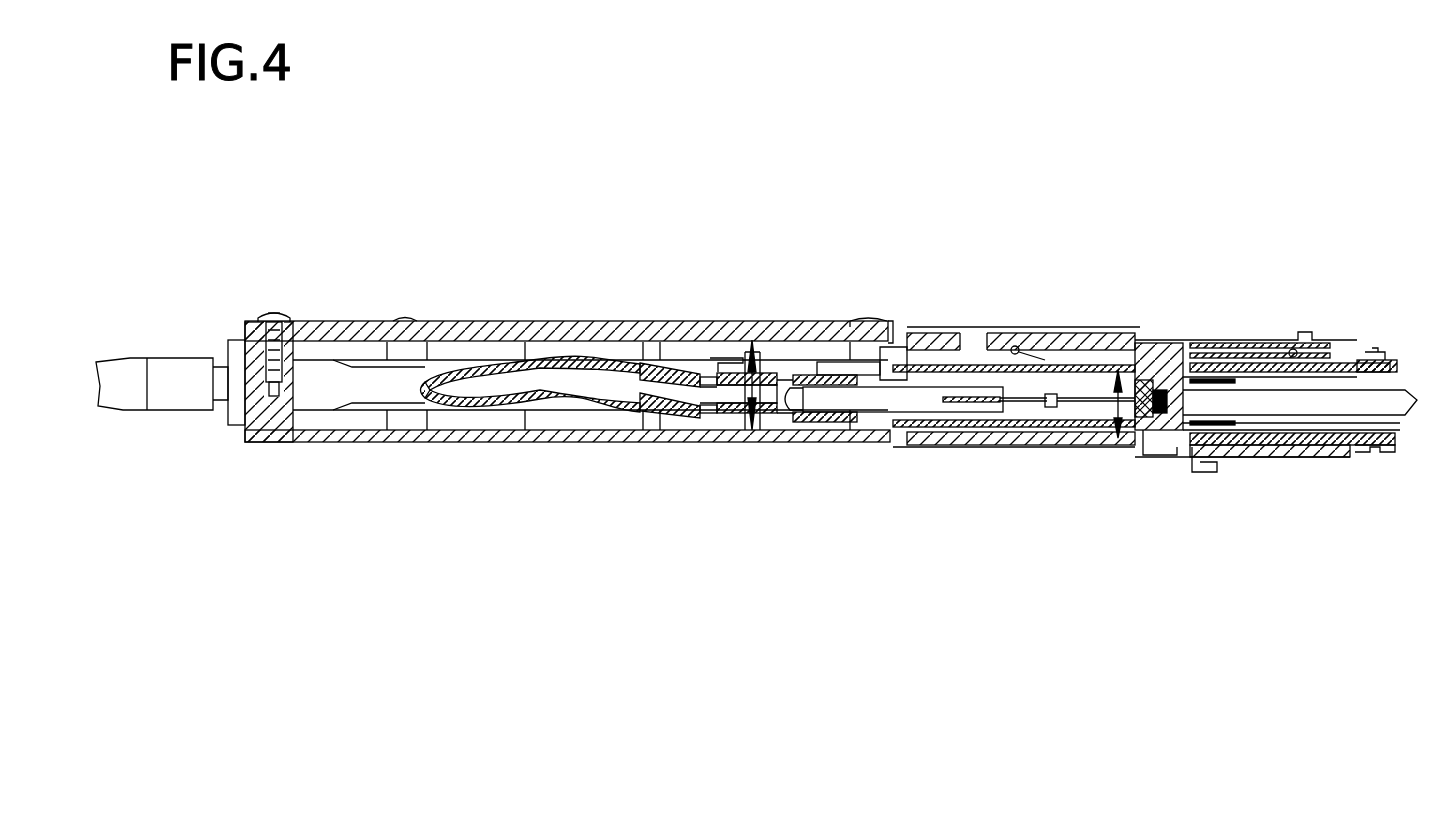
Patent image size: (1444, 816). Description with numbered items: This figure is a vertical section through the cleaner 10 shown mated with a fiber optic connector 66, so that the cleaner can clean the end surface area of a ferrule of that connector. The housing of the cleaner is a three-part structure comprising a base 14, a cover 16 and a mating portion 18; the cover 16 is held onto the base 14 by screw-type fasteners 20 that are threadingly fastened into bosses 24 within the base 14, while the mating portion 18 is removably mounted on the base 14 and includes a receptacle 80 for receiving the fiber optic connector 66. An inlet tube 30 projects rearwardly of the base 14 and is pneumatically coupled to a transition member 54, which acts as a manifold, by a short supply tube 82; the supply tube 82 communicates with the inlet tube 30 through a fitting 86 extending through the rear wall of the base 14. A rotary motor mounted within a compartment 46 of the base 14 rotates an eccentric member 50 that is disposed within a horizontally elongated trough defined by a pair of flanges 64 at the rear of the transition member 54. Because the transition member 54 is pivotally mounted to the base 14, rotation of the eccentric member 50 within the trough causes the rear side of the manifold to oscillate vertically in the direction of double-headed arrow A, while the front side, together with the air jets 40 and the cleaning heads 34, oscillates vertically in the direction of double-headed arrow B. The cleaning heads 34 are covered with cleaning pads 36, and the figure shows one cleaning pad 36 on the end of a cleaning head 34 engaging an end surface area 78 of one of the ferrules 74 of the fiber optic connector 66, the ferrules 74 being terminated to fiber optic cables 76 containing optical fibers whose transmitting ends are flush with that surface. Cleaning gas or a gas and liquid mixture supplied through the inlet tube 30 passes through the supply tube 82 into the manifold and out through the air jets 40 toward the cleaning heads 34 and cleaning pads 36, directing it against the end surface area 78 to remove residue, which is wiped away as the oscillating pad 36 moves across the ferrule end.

The cleaner 10 is at (836, 284).
The base 14 is at (437, 435).
The cover 16 is at (458, 333).
The mating portion 18 is at (1040, 338).
The screw-type fasteners 20 is at (291, 324).
The bosses 24 is at (288, 353).
The inlet tube 30 is at (137, 400).
The cleaning heads 34 is at (1015, 385).
The cleaning pads 36 is at (1088, 398).
The air jets 40 is at (925, 415).
The compartment 46 is at (572, 348).
The eccentric member 50 is at (711, 328).
The transition member 54 is at (808, 410).
The flanges 64 is at (733, 355).
The fiber optic connector 66 is at (1372, 352).
The ferrules 74 is at (1153, 388).
The fiber optic cables 76 is at (1330, 400).
The end surface area 78 is at (1123, 400).
The receptacle 80 is at (1052, 432).
The supply tube 82 is at (548, 406).
The fitting 86 is at (238, 396).
The double-headed arrow A is at (772, 355).
The double-headed arrow B is at (1145, 338).